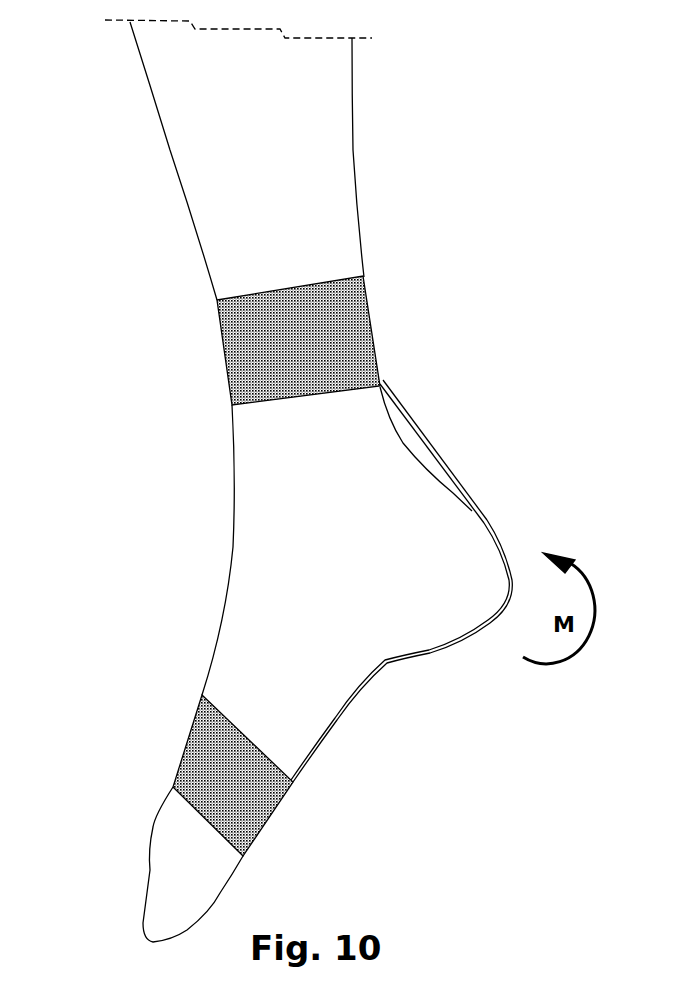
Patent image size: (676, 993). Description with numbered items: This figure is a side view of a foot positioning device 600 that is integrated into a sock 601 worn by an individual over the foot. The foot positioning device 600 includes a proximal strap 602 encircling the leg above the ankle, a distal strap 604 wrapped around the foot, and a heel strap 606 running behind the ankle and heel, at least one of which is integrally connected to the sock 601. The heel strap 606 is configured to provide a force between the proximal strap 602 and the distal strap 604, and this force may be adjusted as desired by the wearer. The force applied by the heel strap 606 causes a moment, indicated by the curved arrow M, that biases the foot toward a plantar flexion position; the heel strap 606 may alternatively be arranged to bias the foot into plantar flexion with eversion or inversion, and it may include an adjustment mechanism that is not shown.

The foot positioning device 600 is at (142, 200).
The sock 601 is at (277, 563).
The proximal strap 602 is at (363, 310).
The distal strap 604 is at (263, 850).
The heel strap 606 is at (435, 442).